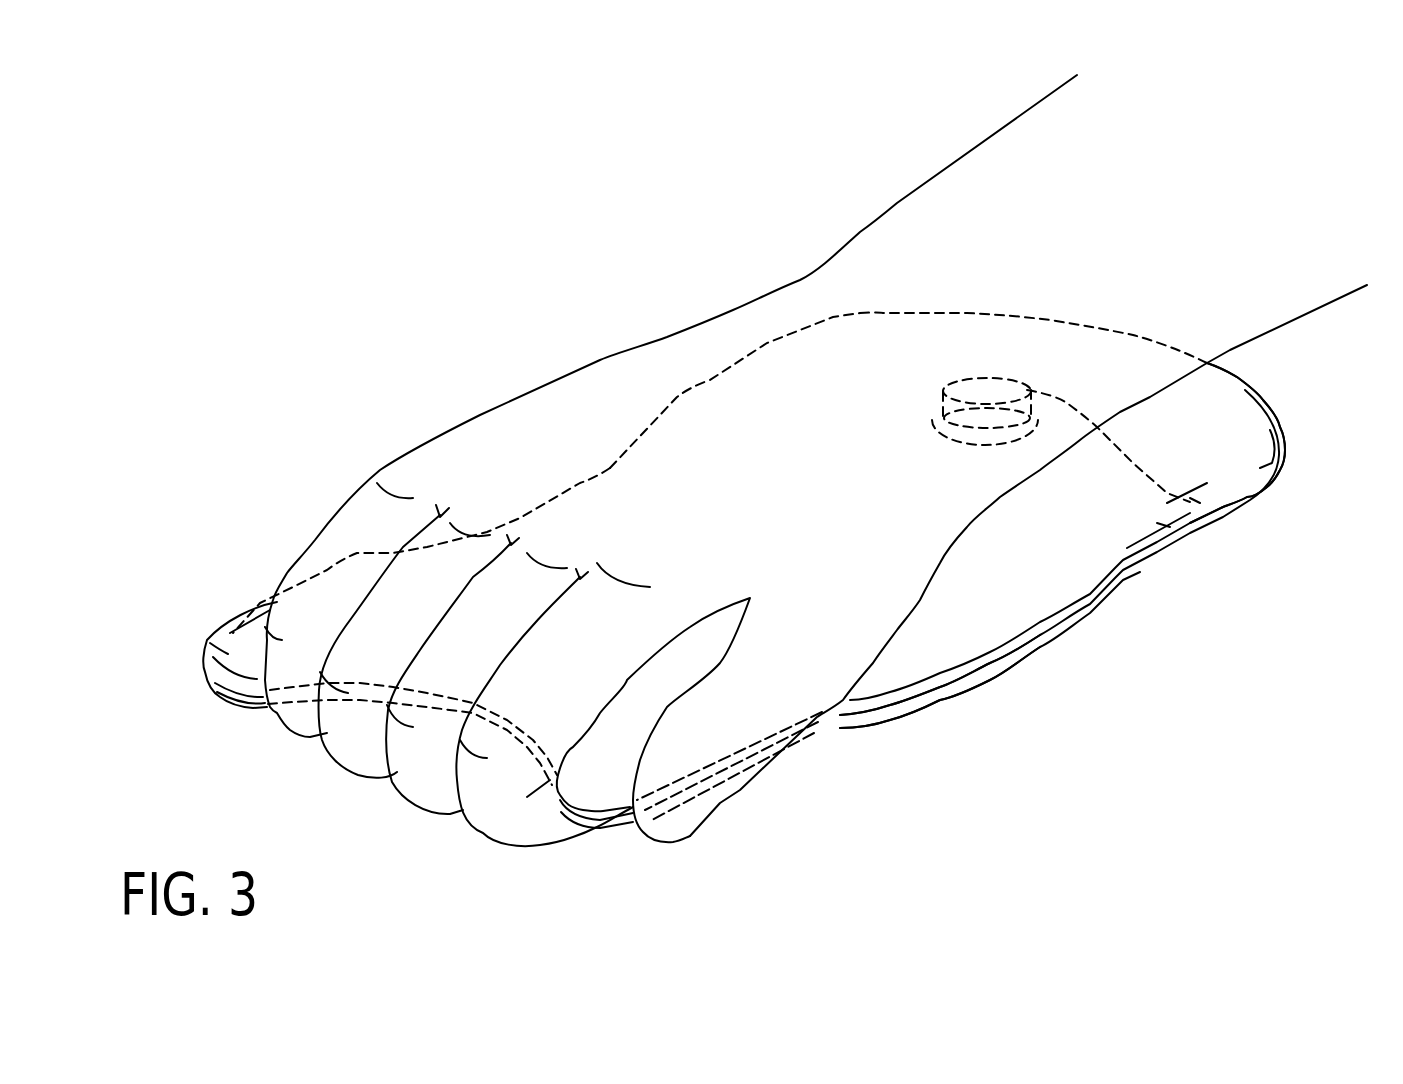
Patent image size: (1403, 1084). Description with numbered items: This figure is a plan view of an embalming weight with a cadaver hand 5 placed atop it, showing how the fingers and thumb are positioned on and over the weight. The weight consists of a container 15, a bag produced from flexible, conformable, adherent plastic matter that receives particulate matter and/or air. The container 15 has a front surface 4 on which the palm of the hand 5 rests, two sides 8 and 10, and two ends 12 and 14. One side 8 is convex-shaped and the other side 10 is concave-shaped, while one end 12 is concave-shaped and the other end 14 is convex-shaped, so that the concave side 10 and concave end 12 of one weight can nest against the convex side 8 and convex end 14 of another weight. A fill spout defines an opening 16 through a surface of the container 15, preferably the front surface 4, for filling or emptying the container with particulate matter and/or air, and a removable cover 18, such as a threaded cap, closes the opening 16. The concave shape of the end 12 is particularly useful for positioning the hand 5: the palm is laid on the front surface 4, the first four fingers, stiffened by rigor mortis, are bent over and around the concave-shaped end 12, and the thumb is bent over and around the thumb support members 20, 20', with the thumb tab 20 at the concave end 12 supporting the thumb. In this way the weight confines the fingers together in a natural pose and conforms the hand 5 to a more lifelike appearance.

The hand 5 is at (453, 412).
The side 10 is at (610, 468).
The end 12 is at (360, 702).
The end 14 is at (947, 313).
The opening 16 is at (943, 417).
The front surface 4 is at (1200, 535).
The side 8 is at (993, 660).
The container 15 is at (915, 727).
The removable cover 18 is at (1243, 513).
The thumb support member 20 is at (204, 631).
The thumb support member 20' is at (658, 751).